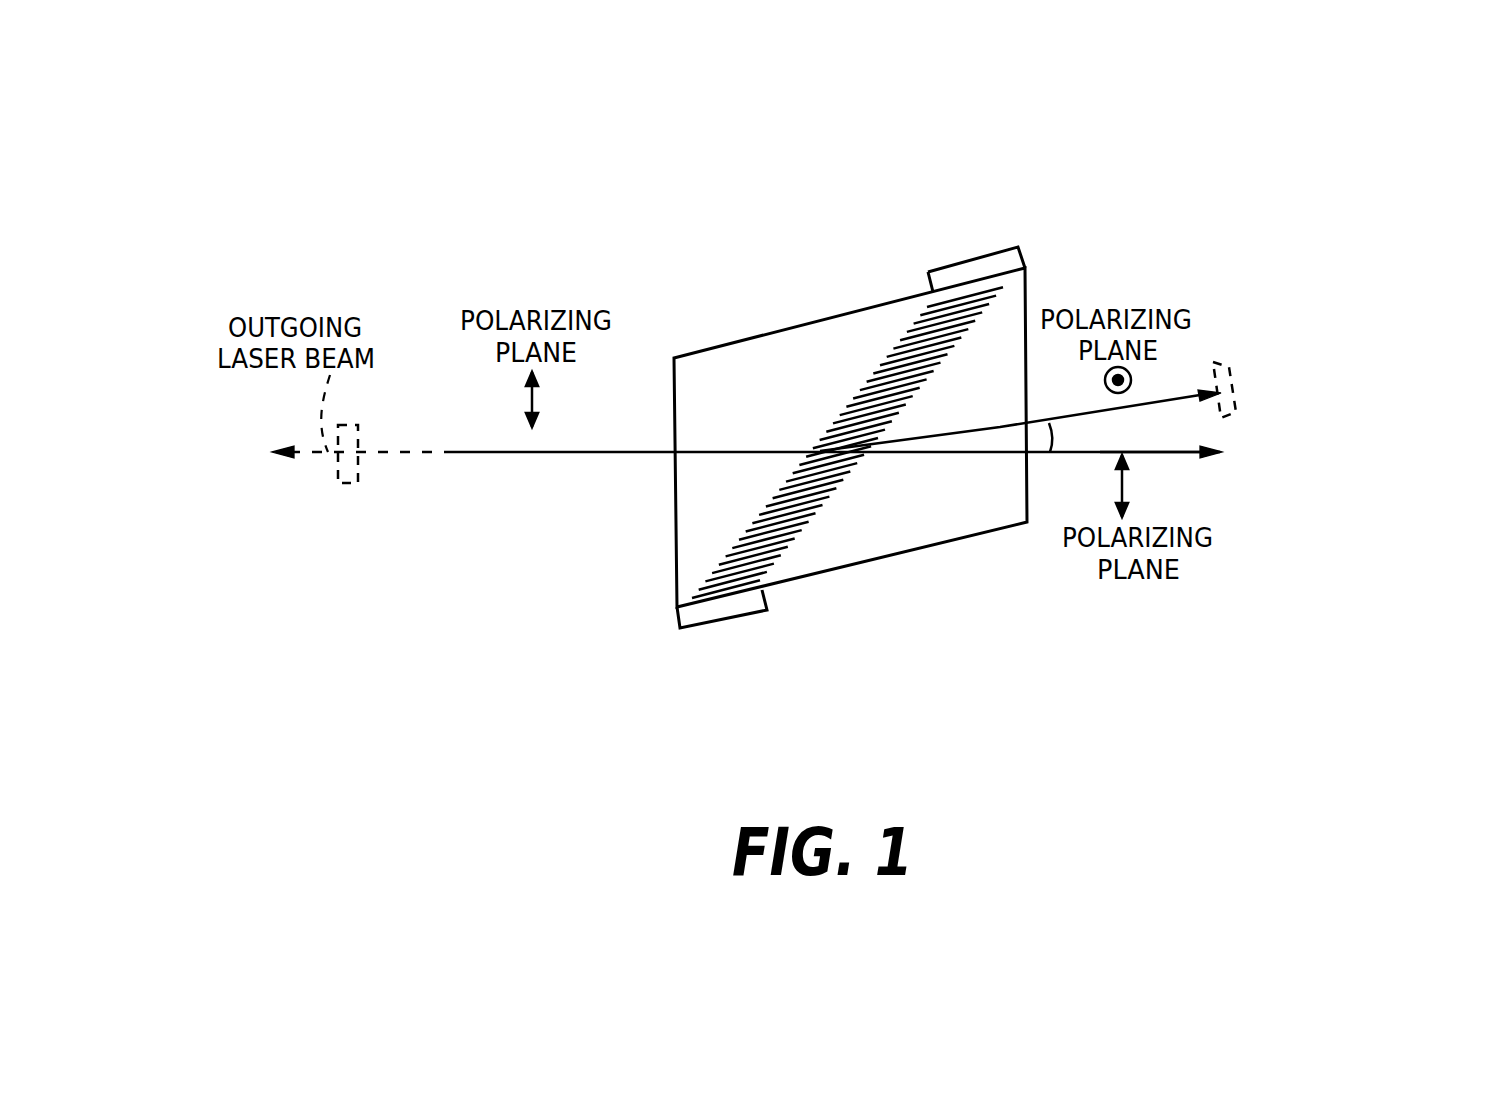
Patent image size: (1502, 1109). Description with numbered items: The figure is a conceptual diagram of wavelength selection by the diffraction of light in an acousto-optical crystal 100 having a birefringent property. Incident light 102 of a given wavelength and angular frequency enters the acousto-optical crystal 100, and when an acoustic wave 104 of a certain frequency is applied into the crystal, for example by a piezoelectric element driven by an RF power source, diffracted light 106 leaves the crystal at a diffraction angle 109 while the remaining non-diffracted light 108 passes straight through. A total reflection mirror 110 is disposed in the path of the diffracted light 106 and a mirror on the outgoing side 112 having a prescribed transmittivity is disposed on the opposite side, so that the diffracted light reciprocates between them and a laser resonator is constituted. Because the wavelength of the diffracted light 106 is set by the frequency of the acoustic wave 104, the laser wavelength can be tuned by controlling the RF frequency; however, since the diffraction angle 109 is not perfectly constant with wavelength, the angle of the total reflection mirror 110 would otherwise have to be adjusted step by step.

The acousto-optical crystal 100 is at (857, 543).
The incident light 102 is at (545, 453).
The acoustic wave 104 is at (920, 310).
The diffracted light 106 is at (1181, 398).
The non-diffracted light 108 is at (1200, 455).
The diffraction angle 109 is at (1050, 428).
The total reflection mirror 110 is at (1232, 385).
The mirror on outgoing side 112 is at (337, 463).